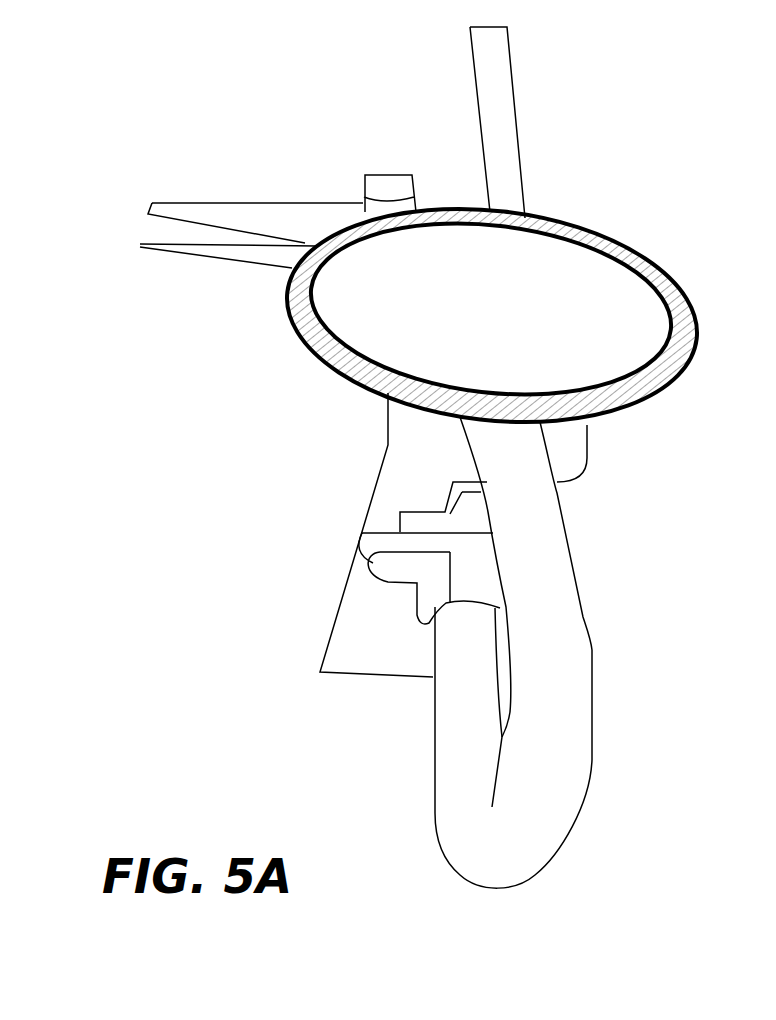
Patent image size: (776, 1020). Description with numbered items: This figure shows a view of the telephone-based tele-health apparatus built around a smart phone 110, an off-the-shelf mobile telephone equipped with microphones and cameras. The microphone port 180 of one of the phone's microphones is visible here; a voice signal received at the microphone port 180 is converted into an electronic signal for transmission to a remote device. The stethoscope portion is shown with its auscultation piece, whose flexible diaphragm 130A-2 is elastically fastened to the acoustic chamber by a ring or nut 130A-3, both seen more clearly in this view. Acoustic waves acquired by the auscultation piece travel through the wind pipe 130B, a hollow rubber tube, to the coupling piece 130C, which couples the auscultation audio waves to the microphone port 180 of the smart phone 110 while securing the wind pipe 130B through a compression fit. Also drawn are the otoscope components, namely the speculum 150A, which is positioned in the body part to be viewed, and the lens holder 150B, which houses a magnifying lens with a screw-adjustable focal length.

The smart phone 110 is at (505, 108).
The speculum 150A is at (259, 203).
The lens holder 150B is at (393, 180).
The flexible diaphragm 130A-2 is at (642, 315).
The ring or nut 130A-3 is at (317, 330).
The microphone port 180 is at (482, 520).
The coupling piece 130C is at (482, 570).
The wind pipe 130B is at (571, 673).